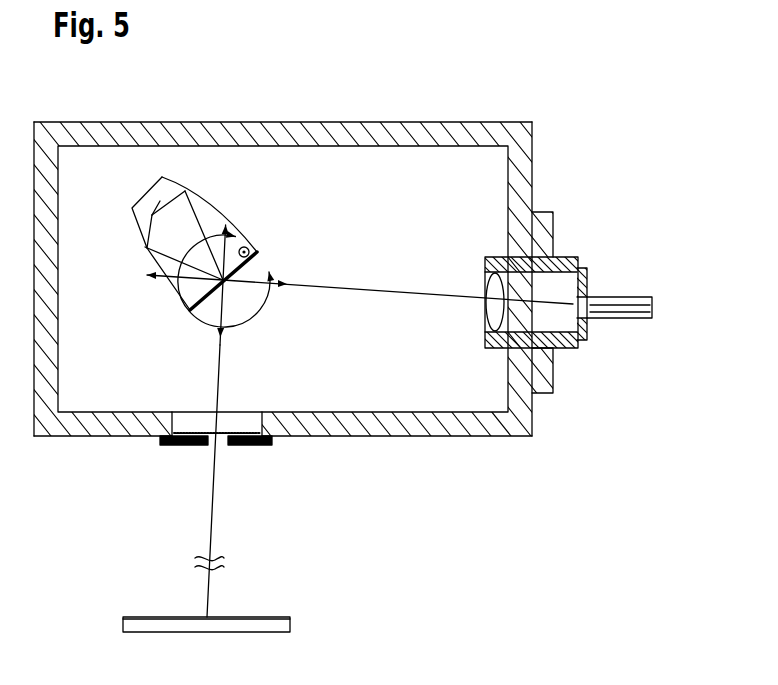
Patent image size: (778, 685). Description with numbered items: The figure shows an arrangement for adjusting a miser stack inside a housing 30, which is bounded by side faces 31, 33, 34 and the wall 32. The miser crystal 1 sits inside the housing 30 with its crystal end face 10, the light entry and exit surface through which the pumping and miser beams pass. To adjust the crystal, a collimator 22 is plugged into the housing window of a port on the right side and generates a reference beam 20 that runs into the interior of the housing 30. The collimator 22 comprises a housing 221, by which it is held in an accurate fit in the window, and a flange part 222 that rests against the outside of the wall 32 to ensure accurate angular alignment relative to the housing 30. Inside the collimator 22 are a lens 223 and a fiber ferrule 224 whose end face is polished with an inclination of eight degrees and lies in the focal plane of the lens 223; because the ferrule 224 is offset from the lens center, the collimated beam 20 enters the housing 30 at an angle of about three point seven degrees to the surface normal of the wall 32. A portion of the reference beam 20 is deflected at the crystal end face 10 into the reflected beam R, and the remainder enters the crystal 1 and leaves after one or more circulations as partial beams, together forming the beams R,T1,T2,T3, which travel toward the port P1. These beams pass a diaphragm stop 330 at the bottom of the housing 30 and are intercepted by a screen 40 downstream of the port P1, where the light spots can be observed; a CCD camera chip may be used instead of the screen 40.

The miser crystal 1 is at (217, 218).
The crystal end face 10 is at (254, 267).
The reference beam 20 is at (412, 293).
The collimator 22 is at (534, 298).
The housing 221 is at (572, 349).
The flange part 222 is at (550, 382).
The lens 223 is at (492, 310).
The fiber ferrule 224 is at (608, 300).
The housing 30 is at (353, 105).
The side face 31 is at (393, 428).
The wall 32 is at (524, 196).
The side face 33 is at (258, 132).
The side face 34 is at (48, 186).
The diaphragm stop 330 is at (212, 447).
The port P1 is at (249, 470).
The reflected beam and partial beams R,T1,T2,T3 is at (212, 518).
The screen 40 is at (280, 617).